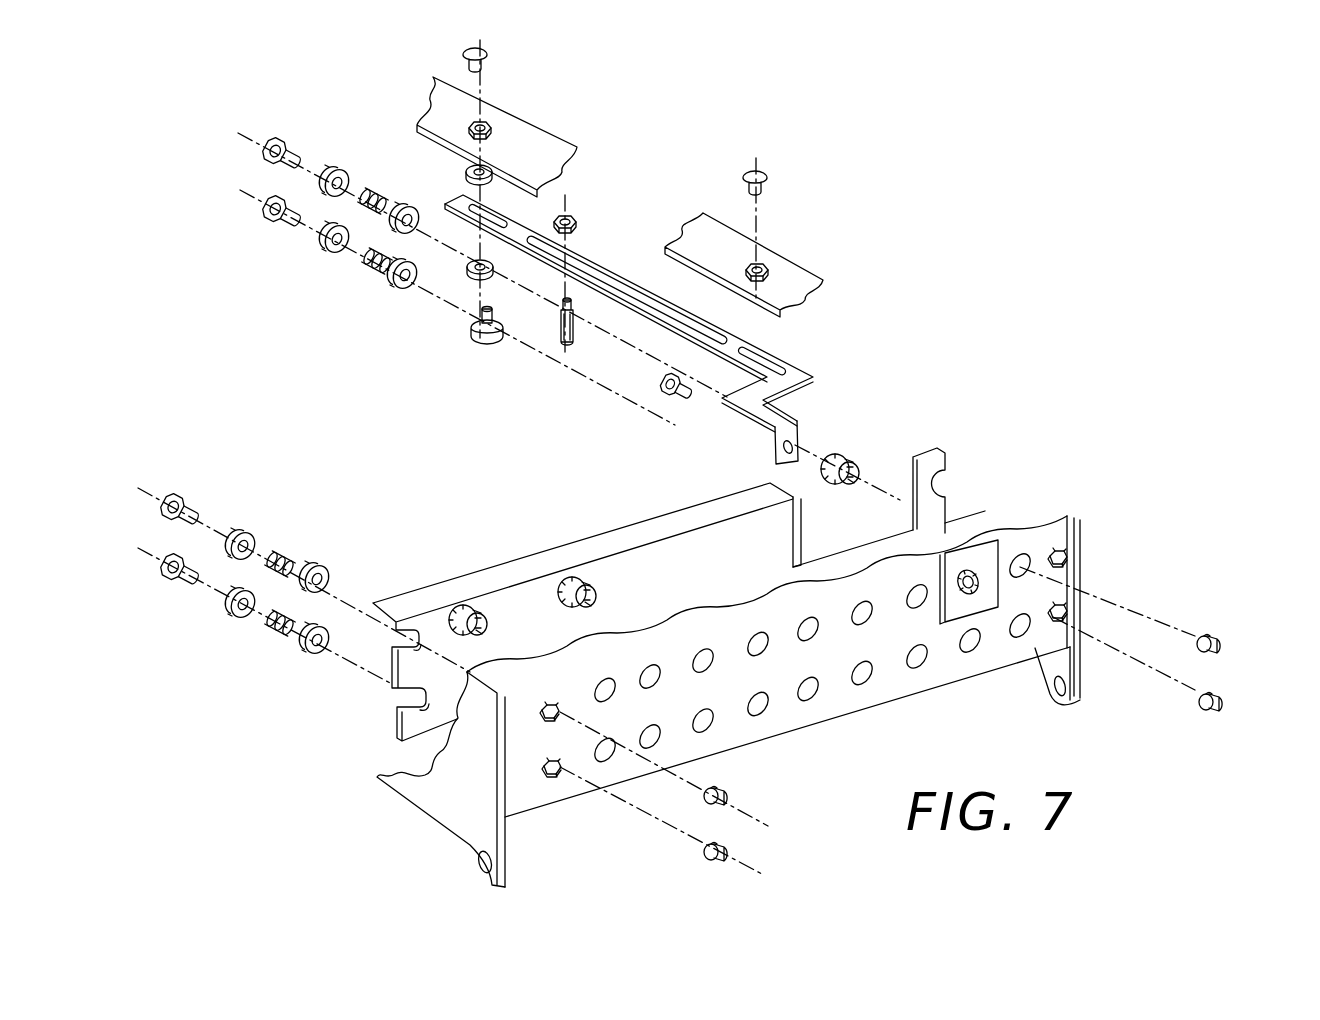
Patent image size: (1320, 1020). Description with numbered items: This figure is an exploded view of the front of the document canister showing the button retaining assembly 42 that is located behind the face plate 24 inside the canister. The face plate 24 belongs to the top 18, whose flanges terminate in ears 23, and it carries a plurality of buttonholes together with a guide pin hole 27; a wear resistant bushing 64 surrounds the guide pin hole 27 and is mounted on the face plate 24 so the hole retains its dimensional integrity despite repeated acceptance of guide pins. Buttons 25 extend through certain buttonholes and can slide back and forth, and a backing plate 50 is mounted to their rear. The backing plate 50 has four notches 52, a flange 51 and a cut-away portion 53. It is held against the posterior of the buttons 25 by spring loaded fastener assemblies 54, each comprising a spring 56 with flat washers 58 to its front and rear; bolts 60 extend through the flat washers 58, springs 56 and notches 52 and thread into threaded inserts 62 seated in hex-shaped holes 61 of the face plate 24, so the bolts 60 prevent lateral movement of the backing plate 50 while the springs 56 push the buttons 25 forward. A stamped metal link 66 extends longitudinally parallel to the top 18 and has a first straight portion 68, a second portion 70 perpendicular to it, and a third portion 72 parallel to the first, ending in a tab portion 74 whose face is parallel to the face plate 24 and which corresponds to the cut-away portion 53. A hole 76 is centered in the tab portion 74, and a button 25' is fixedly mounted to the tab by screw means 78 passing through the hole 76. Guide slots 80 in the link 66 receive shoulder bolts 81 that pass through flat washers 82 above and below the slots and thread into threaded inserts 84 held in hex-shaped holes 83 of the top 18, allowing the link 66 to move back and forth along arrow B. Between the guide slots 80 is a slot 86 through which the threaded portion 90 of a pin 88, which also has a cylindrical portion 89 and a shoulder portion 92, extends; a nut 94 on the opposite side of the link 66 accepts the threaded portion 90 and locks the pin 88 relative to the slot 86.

The top 18 is at (552, 147).
The ears 23 is at (480, 871).
The face plate 24 is at (795, 705).
The buttons 25 is at (556, 592).
The button 25' is at (828, 499).
The guide pin hole 27 is at (966, 596).
The button retaining assembly 42 is at (1012, 457).
The backing plate 50 is at (678, 619).
The flange 51 is at (513, 564).
The notches 52 is at (934, 478).
The cut-away portion 53 is at (795, 556).
The spring loaded fastener assemblies 54 is at (297, 546).
The spring 56 is at (293, 558).
The flat washers 58 is at (247, 534).
The bolts 60 is at (188, 500).
The hex-shaped holes 61 is at (556, 723).
The threaded inserts 62 is at (725, 801).
The bushing 64 is at (940, 568).
The link 66 is at (586, 250).
The first straight portion 68 is at (669, 329).
The second portion 70 is at (812, 394).
The third portion 72 is at (745, 421).
The tab portion 74 is at (801, 428).
The hole 76 is at (780, 452).
The screw means 78 is at (682, 396).
The guide slots 80 is at (472, 206).
The shoulder bolts 81 is at (476, 331).
The flat washers 82 is at (465, 170).
The hex-shaped holes 83 is at (492, 127).
The threaded inserts 84 is at (462, 59).
The slot 86 is at (615, 266).
The pin 88 is at (589, 354).
The cylindrical portion 89 is at (563, 349).
The threaded portion 90 is at (559, 319).
The shoulder portion 92 is at (580, 316).
The nut 94 is at (568, 217).